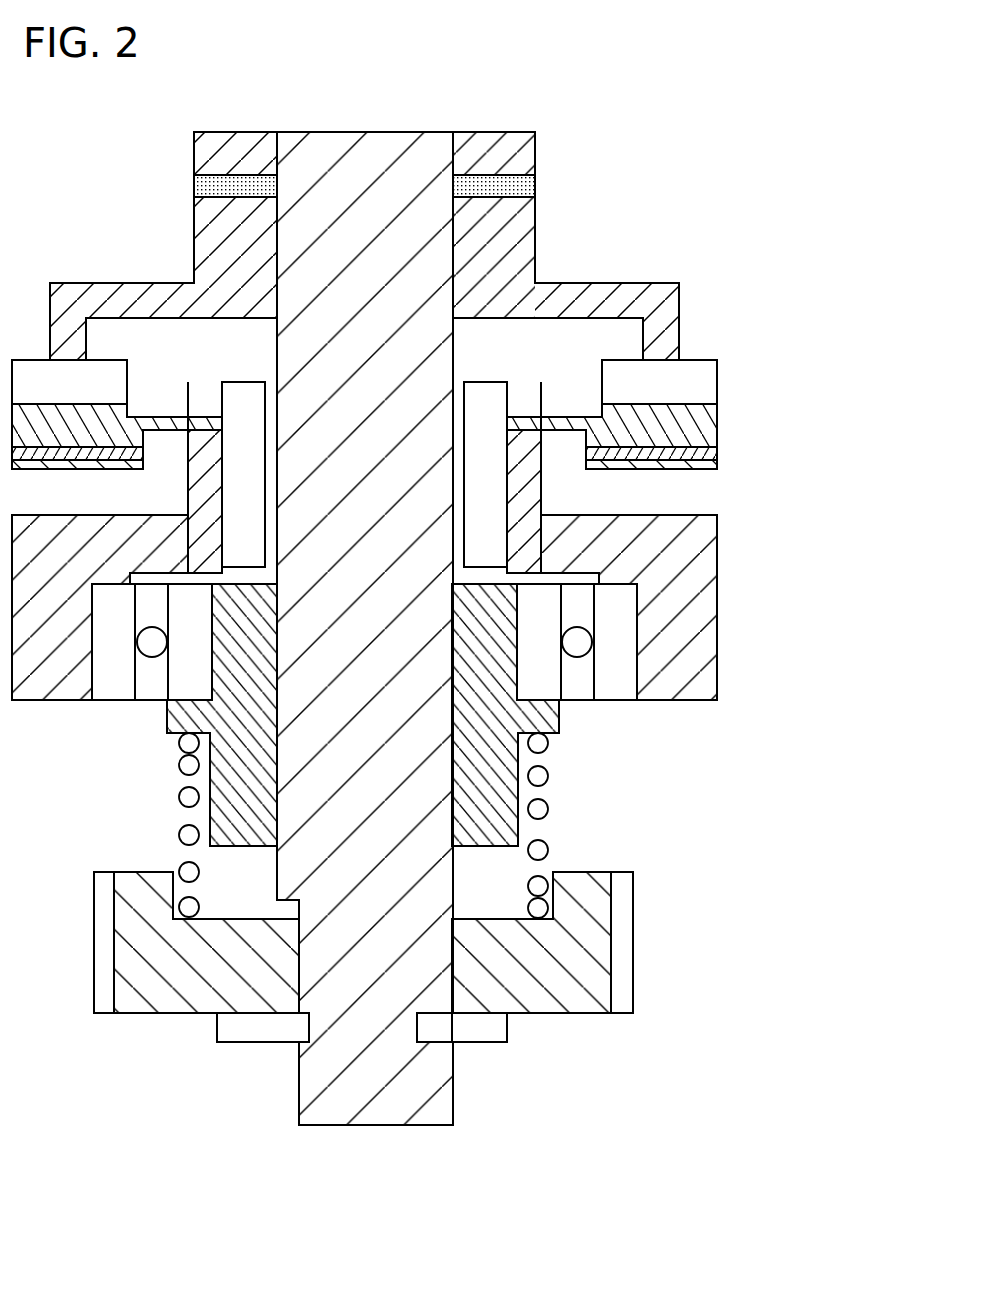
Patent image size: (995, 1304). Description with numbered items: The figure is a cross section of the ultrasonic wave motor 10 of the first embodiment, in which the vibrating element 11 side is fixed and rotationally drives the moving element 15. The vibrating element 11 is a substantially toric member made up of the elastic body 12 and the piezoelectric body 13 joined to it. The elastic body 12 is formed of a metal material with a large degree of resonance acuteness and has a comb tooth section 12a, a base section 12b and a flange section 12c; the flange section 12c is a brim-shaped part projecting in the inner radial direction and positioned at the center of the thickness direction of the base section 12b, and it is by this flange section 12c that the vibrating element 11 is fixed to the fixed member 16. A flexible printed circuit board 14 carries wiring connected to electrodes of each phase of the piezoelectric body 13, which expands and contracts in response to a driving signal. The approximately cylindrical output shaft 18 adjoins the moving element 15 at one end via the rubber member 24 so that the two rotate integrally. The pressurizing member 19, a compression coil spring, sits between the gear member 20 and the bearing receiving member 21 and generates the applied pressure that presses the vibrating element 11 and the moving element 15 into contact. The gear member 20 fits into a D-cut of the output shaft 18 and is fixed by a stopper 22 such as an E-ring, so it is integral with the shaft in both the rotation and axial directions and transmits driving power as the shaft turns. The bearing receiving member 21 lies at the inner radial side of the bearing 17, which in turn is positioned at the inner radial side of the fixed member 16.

The ultrasonic wave motor 10 is at (712, 140).
The vibrating element 11 is at (458, 444).
The elastic body 12 is at (437, 444).
The comb tooth section 12a is at (692, 383).
The base section 12b is at (692, 426).
The flange section 12c is at (541, 420).
The piezoelectric body 13 is at (707, 452).
The flexible printed circuit board 14 is at (670, 463).
The moving element 15 is at (516, 252).
The fixed member 16 is at (692, 585).
The bearing 17 is at (613, 685).
The output shaft 18 is at (431, 225).
The pressurizing member 19 is at (540, 807).
The gear member 20 is at (566, 1000).
The bearing receiving member 21 is at (208, 715).
The stopper 22 is at (492, 1032).
The rubber member 24 is at (205, 187).